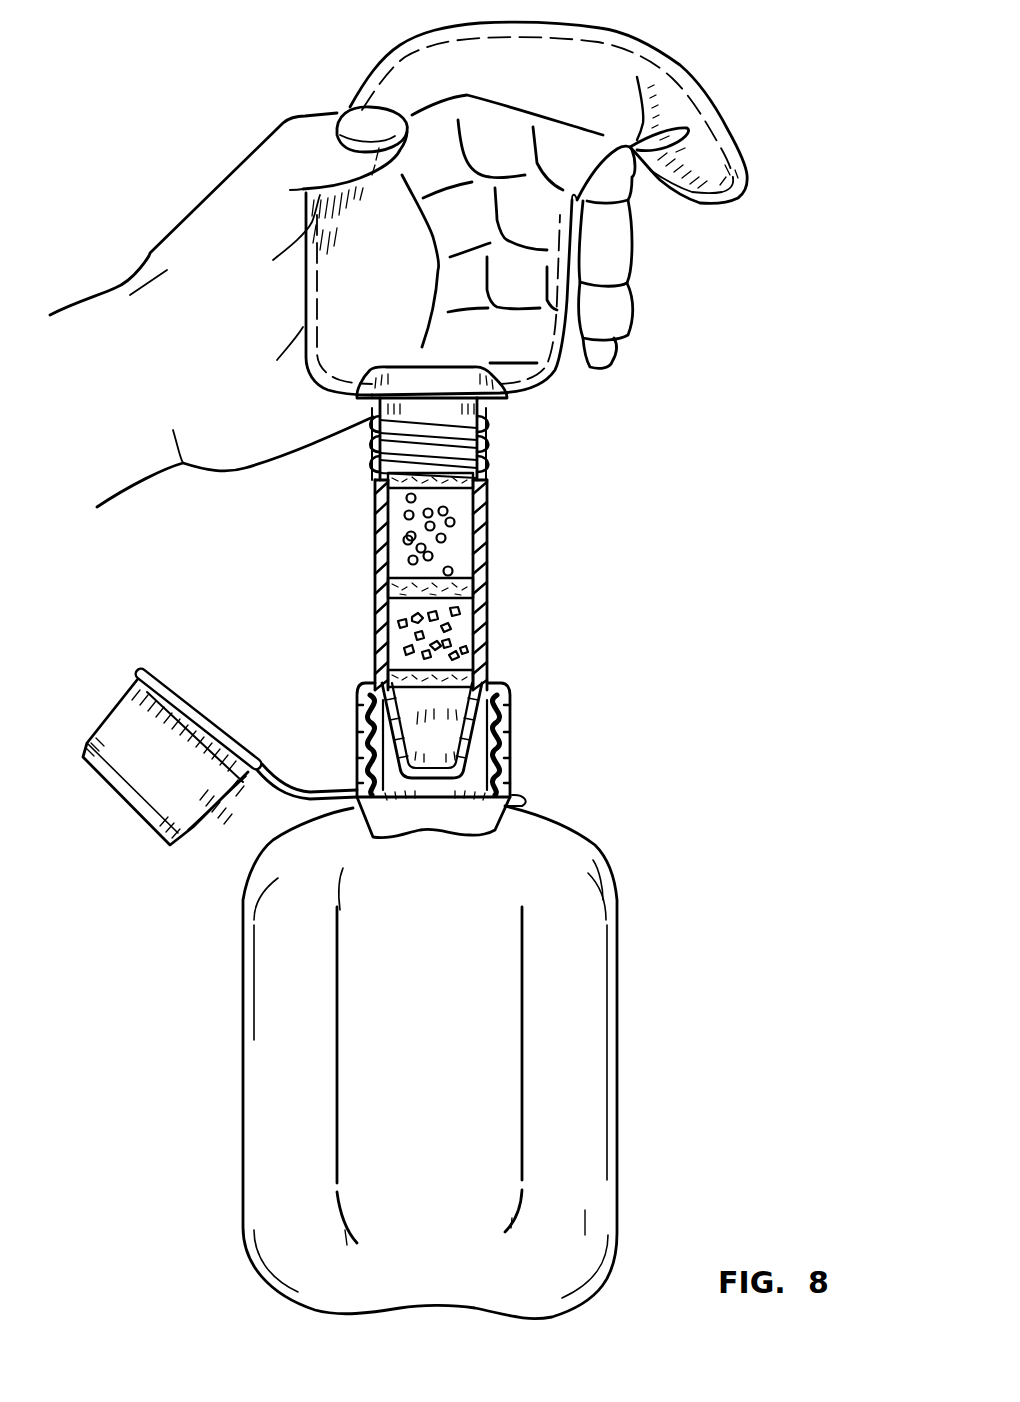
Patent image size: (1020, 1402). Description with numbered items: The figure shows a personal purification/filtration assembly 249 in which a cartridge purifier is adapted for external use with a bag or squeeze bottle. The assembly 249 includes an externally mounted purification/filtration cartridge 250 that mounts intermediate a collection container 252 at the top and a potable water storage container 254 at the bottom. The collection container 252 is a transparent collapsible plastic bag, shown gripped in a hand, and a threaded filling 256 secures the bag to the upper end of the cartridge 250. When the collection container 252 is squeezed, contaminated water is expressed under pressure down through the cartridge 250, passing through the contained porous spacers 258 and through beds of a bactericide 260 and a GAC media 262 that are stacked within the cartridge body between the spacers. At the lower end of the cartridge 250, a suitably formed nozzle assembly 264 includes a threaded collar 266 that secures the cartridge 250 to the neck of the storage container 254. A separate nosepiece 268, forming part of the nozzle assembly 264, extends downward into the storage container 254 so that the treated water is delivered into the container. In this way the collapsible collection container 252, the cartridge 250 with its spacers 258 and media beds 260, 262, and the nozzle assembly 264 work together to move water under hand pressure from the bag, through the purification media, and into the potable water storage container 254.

The personal purification/filtration assembly 249 is at (652, 401).
The purification/filtration cartridge 250 is at (490, 600).
The collection container 252 is at (730, 198).
The potable water storage container 254 is at (618, 1058).
The threaded filling 256 is at (490, 446).
The porous spacers 258 is at (452, 486).
The bactericide 260 is at (448, 539).
The GAC media 262 is at (452, 652).
The nozzle assembly 264 is at (358, 718).
The threaded collar 266 is at (512, 728).
The nosepiece 268 is at (512, 772).